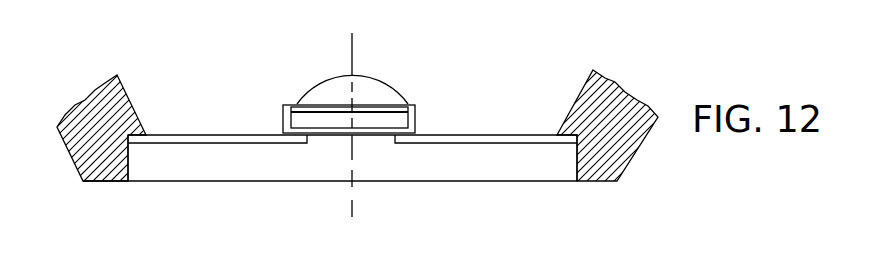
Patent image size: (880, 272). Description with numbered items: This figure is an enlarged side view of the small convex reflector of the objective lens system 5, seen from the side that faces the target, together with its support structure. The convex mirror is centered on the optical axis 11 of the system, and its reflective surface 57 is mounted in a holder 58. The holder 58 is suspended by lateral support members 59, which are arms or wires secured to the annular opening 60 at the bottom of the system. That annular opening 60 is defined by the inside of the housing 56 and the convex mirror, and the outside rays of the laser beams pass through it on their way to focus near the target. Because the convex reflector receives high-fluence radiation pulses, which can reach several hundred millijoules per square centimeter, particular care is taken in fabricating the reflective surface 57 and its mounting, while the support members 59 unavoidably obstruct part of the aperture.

The objective lens system 5 is at (651, 101).
The axis 11 is at (352, 47).
The housing 56 is at (630, 164).
The reflective surface 57 is at (397, 88).
The holder 58 is at (415, 120).
The lateral support members 59 is at (220, 135).
The annular opening 60 is at (463, 185).